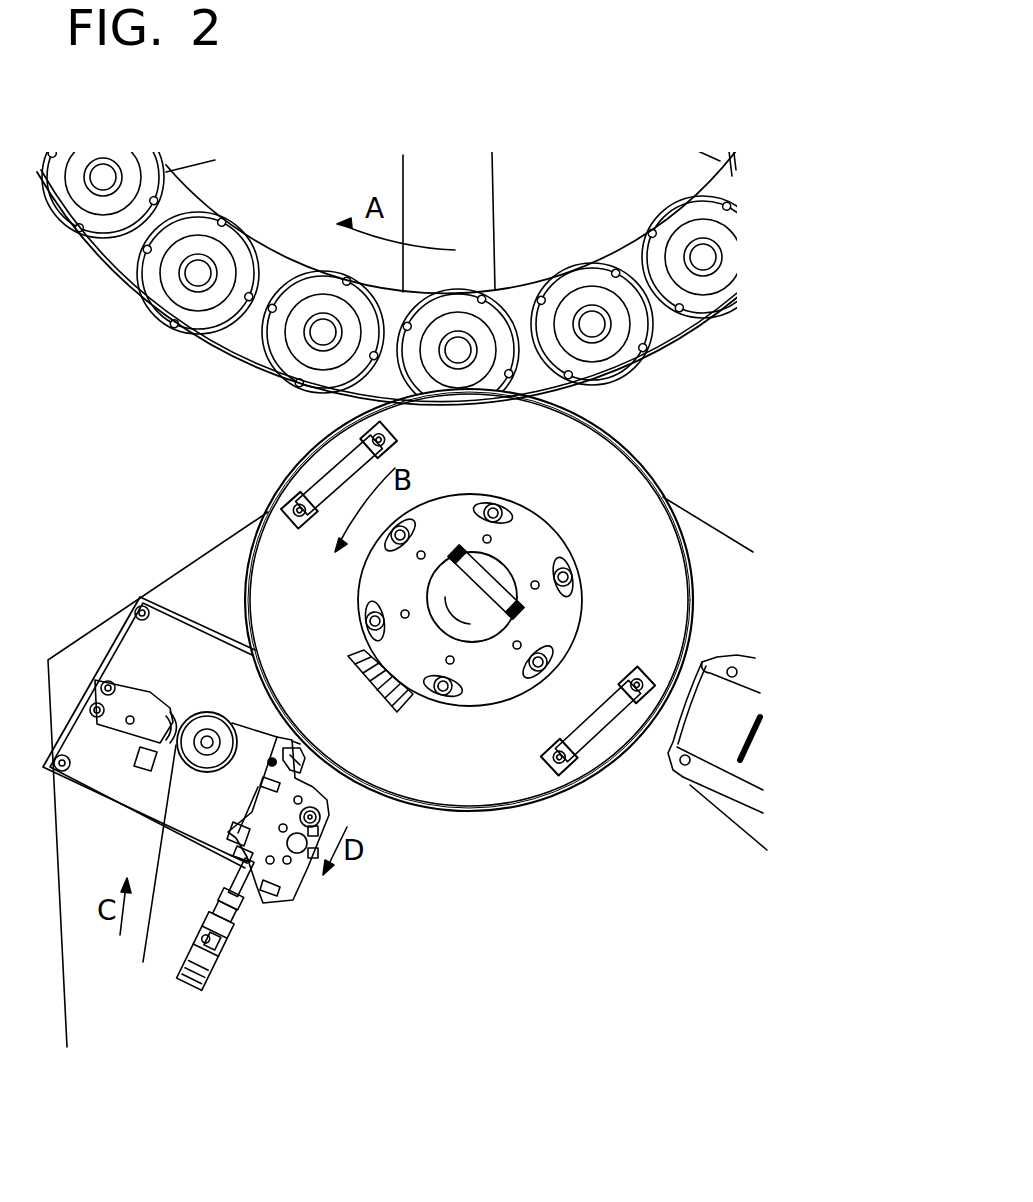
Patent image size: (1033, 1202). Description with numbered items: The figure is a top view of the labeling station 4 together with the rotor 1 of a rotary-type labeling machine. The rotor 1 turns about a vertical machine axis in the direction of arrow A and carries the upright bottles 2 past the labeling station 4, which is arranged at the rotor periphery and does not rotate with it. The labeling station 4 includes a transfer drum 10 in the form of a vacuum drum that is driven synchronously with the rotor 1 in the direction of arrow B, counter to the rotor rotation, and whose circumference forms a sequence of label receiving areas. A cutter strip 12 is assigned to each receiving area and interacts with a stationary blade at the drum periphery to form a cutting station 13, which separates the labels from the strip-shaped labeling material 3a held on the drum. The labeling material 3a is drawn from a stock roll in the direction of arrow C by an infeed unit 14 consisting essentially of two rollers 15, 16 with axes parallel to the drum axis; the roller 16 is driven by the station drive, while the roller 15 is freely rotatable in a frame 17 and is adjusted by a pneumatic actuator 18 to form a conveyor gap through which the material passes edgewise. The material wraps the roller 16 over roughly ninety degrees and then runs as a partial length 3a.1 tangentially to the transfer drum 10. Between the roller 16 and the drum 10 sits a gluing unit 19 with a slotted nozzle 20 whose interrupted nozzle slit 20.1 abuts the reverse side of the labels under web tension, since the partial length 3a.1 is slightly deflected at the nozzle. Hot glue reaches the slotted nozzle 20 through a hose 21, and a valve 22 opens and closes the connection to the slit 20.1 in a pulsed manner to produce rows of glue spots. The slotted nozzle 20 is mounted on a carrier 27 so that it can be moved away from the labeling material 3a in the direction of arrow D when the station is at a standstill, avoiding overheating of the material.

The rotor 1 is at (237, 337).
The bottles 2 is at (197, 298).
The labeling material 3a is at (158, 885).
The partial length of the labeling material 3a.1 is at (256, 734).
The labeling station 4 is at (470, 912).
The transfer drum 10 is at (650, 553).
The cutter strip 12 is at (607, 518).
The cutting station 13 is at (670, 800).
The infeed unit 14 is at (166, 640).
The roller 15 is at (177, 715).
The roller 16 is at (215, 760).
The frame 17 is at (145, 713).
The pneumatic actuator 18 is at (138, 770).
The gluing unit 19 is at (317, 912).
The slotted nozzle 20 is at (312, 748).
The nozzle slit with multiple interruptions 20.1 is at (298, 757).
The hose 21 is at (217, 952).
The valve 22 is at (233, 829).
The carrier 27 is at (297, 860).